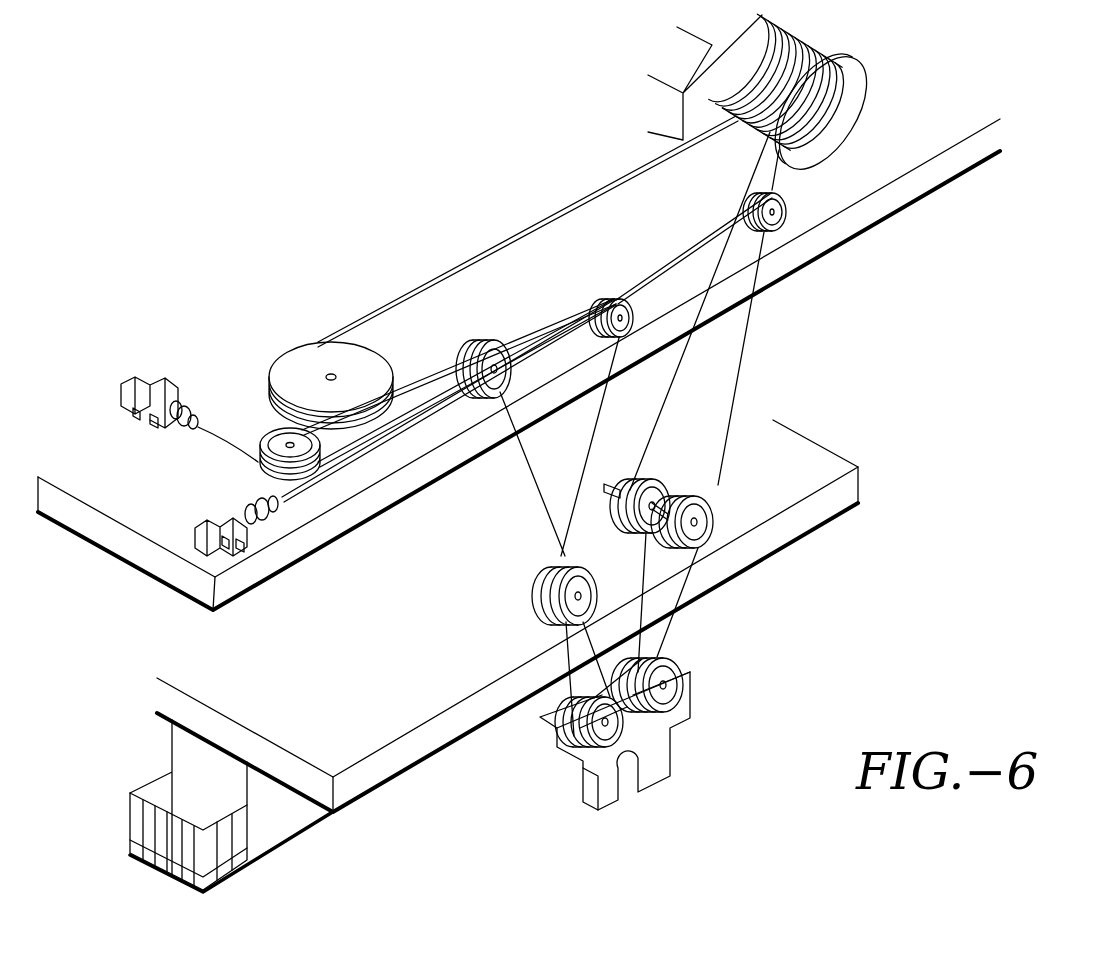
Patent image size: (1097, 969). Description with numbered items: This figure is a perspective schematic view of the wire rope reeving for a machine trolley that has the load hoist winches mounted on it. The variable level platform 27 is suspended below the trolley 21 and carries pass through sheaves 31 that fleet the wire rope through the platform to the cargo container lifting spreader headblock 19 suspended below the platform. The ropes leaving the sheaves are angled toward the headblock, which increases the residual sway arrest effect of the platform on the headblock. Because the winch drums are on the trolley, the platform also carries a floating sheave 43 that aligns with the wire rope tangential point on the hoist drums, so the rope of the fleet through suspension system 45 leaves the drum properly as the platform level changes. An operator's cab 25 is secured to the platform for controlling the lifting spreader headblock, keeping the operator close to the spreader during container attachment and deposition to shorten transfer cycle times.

The cargo container lifting spreader headblock 19 is at (665, 760).
The trolley 21 is at (930, 181).
The operator's cab 25 is at (290, 822).
The variable level platform 27 is at (796, 527).
The pass through sheaves 31 is at (543, 584).
The floating sheave 43 is at (631, 490).
The fleet through suspension system 45 is at (853, 100).